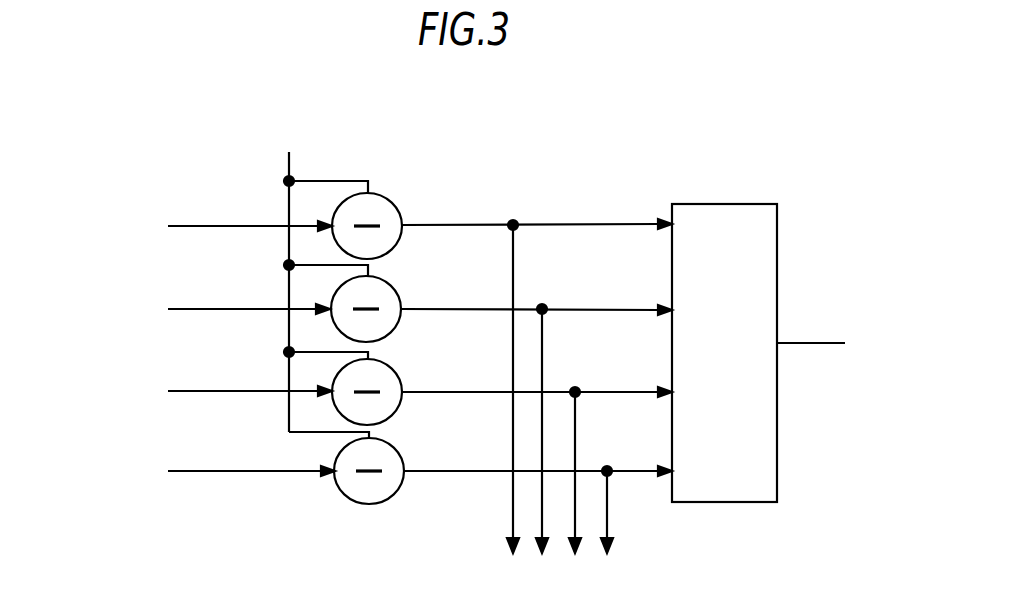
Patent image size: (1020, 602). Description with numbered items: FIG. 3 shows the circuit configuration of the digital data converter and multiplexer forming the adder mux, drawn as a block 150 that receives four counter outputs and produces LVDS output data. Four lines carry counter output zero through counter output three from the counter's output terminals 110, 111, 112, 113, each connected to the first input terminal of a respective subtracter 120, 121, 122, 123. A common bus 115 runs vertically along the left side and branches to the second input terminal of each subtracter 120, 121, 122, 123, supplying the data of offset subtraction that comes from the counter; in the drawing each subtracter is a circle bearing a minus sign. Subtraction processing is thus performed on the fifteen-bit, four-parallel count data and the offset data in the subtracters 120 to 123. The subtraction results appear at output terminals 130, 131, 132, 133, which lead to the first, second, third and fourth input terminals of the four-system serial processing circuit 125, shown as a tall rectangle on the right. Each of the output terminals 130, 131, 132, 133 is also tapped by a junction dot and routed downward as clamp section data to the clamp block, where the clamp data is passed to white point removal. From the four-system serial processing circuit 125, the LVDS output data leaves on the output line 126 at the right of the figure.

The output circuit / LVDS output section 150 is at (637, 105).
The clamp data bus line 115 is at (323, 280).
The output terminal 110 is at (169, 217).
The output terminal 111 is at (168, 304).
The output terminal 112 is at (169, 384).
The output terminal 113 is at (171, 465).
The subtracter 120 is at (396, 203).
The subtracter 121 is at (395, 286).
The subtracter 122 is at (396, 369).
The subtracter 123 is at (398, 448).
The output terminal 130 is at (563, 223).
The output terminal 131 is at (572, 308).
The output terminal 132 is at (594, 391).
The output terminal 133 is at (585, 470).
The 4-system serial processing circuit 125 is at (722, 203).
The LVDS output data line 126 is at (810, 343).